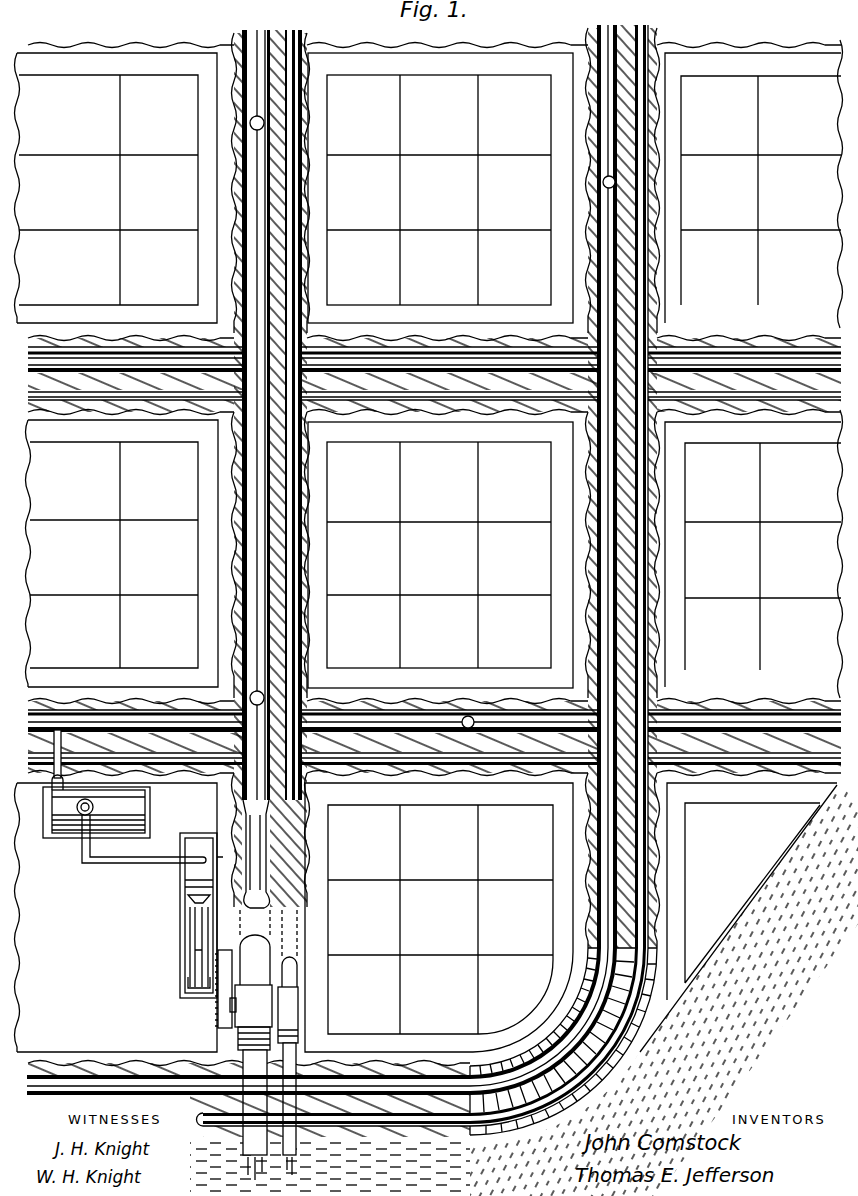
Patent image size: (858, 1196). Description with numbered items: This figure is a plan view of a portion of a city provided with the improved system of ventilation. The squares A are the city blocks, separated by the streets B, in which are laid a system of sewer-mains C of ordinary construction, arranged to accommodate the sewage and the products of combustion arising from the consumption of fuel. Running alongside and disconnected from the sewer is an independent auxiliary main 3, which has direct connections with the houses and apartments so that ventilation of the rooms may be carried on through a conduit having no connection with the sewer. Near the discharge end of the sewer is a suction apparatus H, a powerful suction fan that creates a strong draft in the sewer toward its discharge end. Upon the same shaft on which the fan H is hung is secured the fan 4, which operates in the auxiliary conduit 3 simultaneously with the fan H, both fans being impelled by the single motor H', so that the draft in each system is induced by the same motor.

The squares A is at (82, 574).
The auxiliary main 3 is at (302, 43).
The fan 4 is at (300, 1004).
The streets B is at (337, 564).
The sewer-mains C is at (44, 1114).
The suction apparatus H is at (196, 934).
The motor H' is at (184, 941).